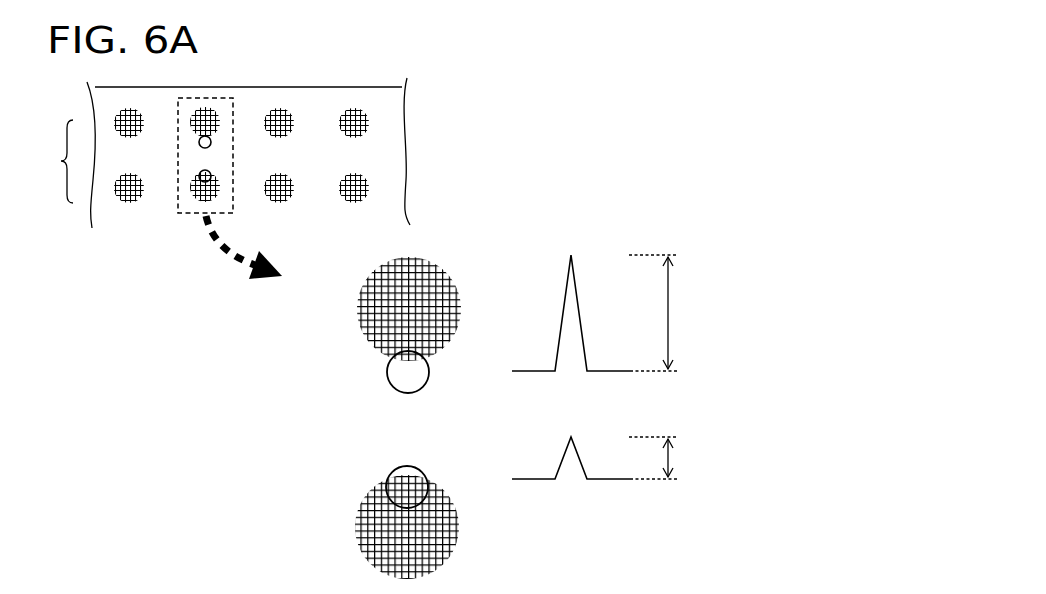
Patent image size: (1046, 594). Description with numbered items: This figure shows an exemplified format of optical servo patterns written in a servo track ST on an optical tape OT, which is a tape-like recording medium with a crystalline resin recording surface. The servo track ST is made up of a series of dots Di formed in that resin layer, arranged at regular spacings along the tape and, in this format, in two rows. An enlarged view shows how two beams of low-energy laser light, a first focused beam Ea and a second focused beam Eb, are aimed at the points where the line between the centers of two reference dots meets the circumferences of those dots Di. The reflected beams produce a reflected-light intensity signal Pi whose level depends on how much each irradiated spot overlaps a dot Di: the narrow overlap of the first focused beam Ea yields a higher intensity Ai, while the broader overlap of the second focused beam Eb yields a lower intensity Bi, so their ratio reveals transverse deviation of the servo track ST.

The optical tape OT is at (437, 150).
The servo track ST is at (47, 161).
The dot Di is at (355, 525).
The first focused beam Ea is at (387, 372).
The second focused beam Eb is at (387, 487).
The intensity of reflected-light intensity signal Ai is at (688, 313).
The intensity of reflected-light intensity signal Bi is at (688, 460).
The reflected-light intensity signal Pi is at (700, 374).